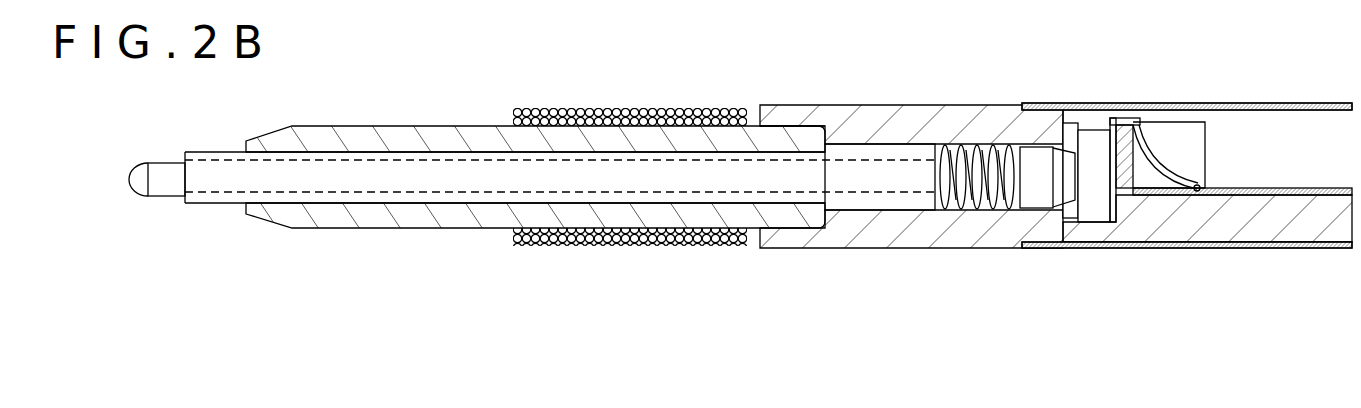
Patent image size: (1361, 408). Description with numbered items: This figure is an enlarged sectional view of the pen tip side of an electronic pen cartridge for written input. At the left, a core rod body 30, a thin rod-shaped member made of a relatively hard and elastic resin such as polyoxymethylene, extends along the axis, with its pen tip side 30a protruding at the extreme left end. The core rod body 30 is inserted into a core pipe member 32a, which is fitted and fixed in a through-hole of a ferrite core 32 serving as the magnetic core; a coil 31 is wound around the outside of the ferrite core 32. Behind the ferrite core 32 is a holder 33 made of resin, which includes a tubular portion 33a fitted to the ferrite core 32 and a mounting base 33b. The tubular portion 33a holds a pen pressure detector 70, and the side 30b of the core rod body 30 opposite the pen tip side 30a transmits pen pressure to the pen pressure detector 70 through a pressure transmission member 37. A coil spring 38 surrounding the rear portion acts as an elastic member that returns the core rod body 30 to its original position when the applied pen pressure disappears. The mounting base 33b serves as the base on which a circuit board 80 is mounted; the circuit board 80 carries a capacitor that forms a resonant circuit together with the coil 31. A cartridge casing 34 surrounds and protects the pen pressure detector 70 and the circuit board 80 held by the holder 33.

The core rod body 30 is at (160, 160).
The pen tip side of core rod body 30a is at (142, 188).
The side of core rod body opposite the pen tip side 30b is at (940, 173).
The coil 31 is at (654, 107).
The ferrite core 32 is at (440, 137).
The core pipe member 32a is at (215, 162).
The holder 33 is at (846, 105).
The tubular portion 33a is at (783, 108).
The mounting base 33b is at (1243, 235).
The cartridge casing 34 is at (1292, 104).
The pressure transmission member 37 is at (1042, 196).
The coil spring 38 is at (947, 196).
The pen pressure detector 70 is at (1100, 138).
The circuit board 80 is at (1222, 188).